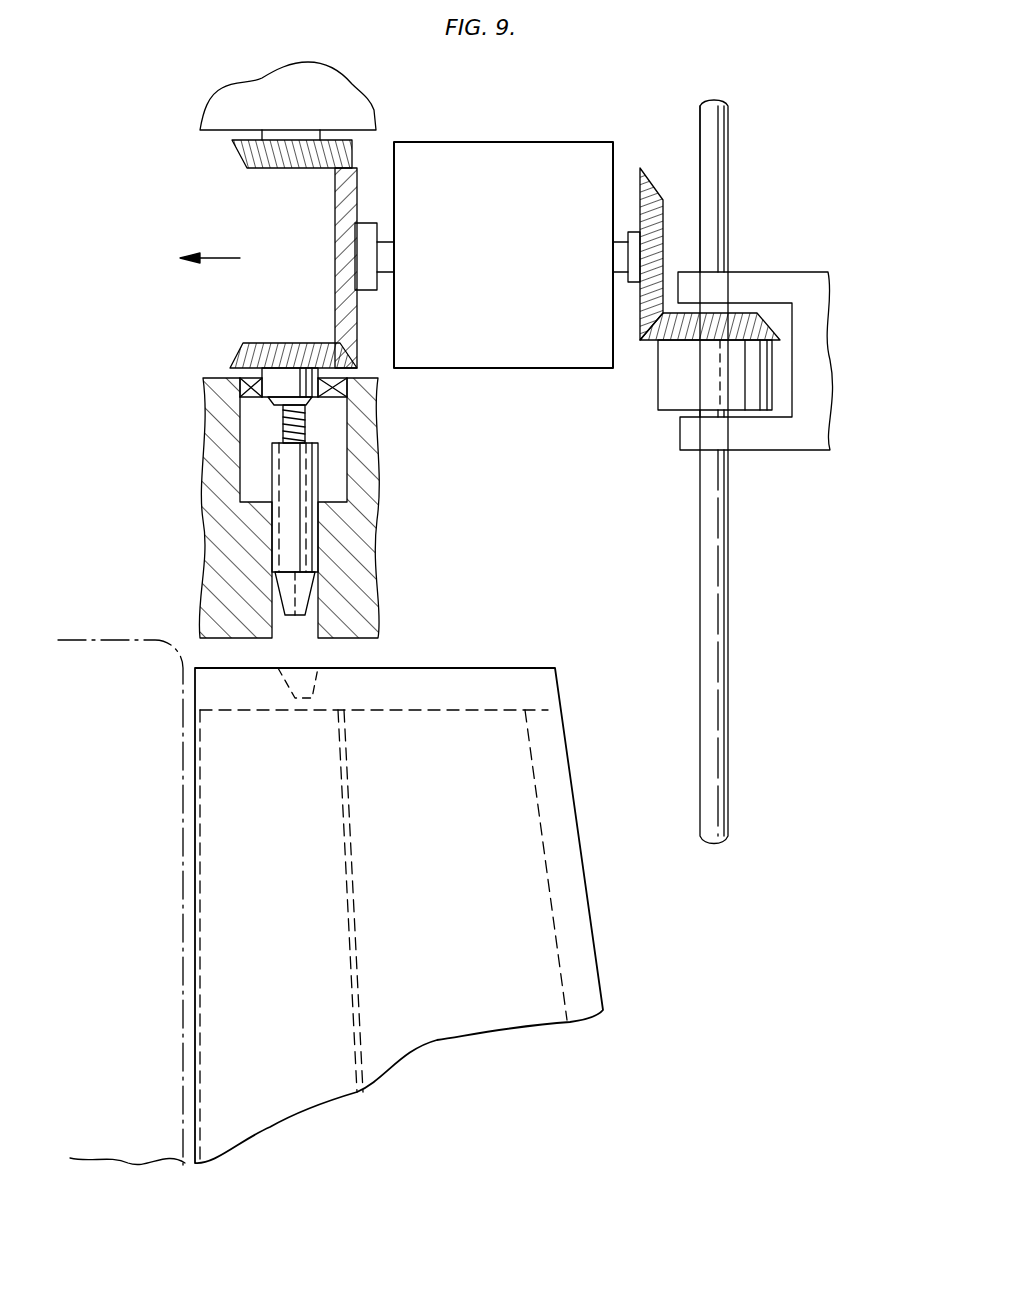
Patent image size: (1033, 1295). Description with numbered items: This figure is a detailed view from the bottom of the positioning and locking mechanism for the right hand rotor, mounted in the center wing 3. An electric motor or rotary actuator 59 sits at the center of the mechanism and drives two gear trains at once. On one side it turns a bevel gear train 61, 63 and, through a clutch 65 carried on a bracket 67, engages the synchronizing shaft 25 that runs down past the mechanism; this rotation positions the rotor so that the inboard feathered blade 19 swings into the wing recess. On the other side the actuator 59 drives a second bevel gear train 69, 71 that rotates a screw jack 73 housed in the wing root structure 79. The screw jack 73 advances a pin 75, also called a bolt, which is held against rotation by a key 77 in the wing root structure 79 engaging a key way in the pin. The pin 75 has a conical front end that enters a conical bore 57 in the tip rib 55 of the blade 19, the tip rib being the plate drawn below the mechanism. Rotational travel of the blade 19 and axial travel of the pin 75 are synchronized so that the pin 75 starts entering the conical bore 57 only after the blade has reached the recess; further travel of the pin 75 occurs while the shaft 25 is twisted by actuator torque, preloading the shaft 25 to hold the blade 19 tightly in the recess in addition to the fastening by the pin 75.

The center wing 3 is at (183, 752).
The blade 19 is at (546, 767).
The synchronizing shaft 25 is at (705, 585).
The tip rib 55 is at (456, 668).
The conical bore 57 is at (318, 690).
The electric motor or actuator 59 is at (483, 152).
The bevel gear 61 is at (652, 182).
The bevel gear 63 is at (735, 320).
The clutch 65 is at (666, 375).
The bracket 67 is at (690, 433).
The bevel gear 69 is at (338, 195).
The bevel gear 71 is at (272, 345).
The screw jack 73 is at (306, 428).
The pin 75 is at (306, 480).
The key 77 is at (285, 597).
The wing root structure 79 is at (215, 440).